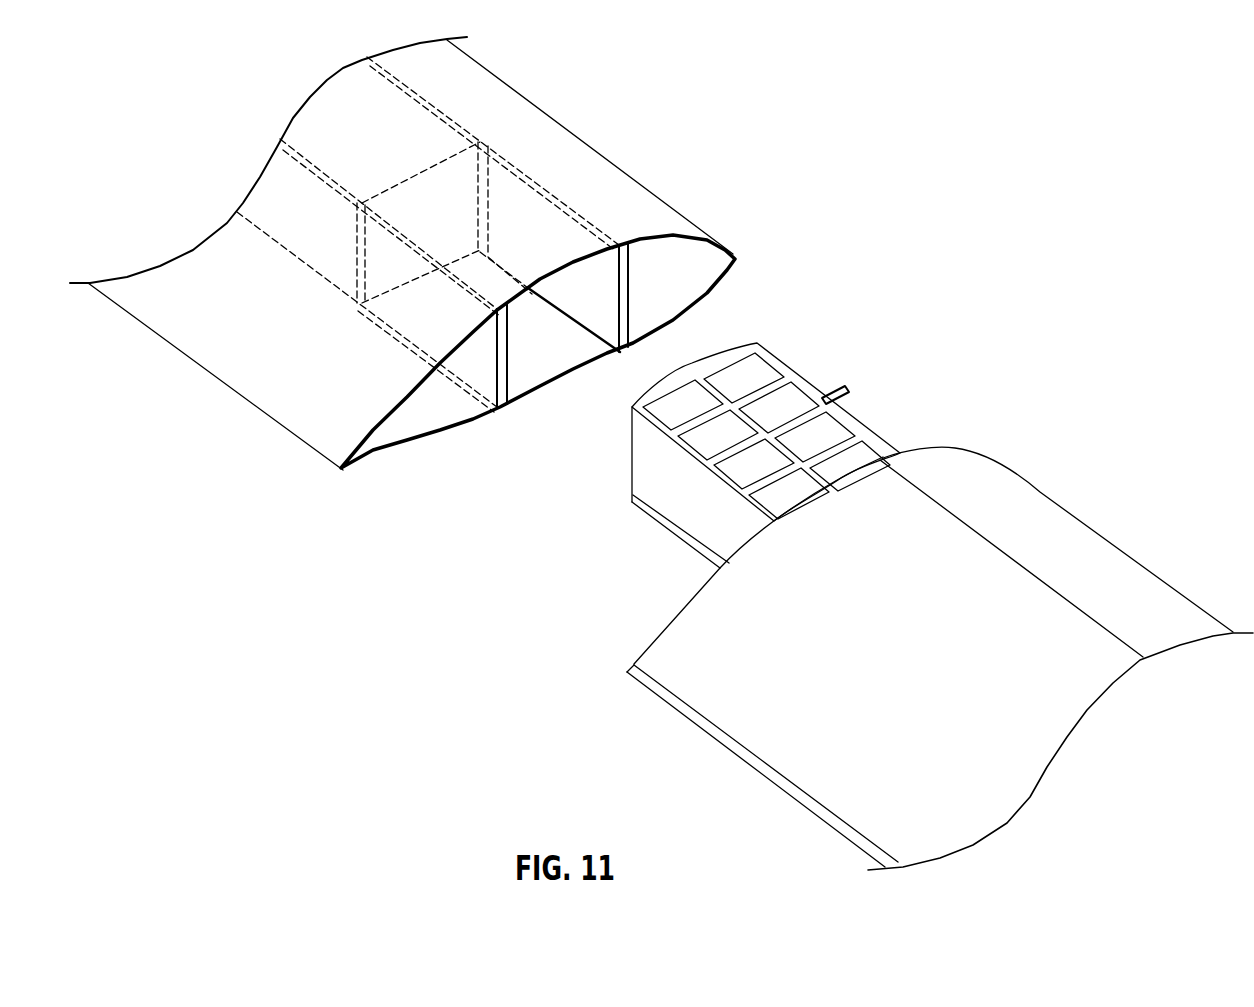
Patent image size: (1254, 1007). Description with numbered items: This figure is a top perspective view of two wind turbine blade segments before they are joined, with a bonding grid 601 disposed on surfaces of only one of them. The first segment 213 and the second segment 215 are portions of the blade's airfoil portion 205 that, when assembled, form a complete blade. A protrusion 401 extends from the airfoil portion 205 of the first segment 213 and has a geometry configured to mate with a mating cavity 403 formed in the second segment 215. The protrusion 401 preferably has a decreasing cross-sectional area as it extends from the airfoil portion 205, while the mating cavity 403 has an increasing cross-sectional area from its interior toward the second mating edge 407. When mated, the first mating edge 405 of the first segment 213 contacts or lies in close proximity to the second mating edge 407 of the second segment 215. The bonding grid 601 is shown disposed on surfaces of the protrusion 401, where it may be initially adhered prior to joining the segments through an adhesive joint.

The airfoil portion 205 is at (275, 337).
The first segment 213 is at (1025, 507).
The second segment 215 is at (507, 120).
The protrusion 401 is at (631, 480).
The mating cavity 403 is at (543, 362).
The first mating edge 405 is at (643, 648).
The second mating edge 407 is at (707, 272).
The bonding grid 601 is at (857, 418).